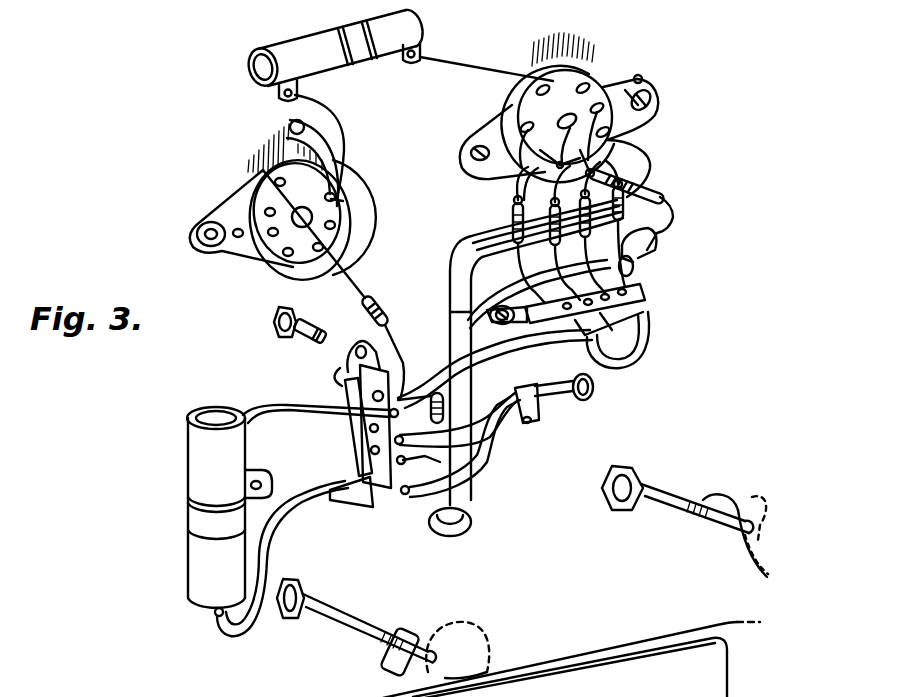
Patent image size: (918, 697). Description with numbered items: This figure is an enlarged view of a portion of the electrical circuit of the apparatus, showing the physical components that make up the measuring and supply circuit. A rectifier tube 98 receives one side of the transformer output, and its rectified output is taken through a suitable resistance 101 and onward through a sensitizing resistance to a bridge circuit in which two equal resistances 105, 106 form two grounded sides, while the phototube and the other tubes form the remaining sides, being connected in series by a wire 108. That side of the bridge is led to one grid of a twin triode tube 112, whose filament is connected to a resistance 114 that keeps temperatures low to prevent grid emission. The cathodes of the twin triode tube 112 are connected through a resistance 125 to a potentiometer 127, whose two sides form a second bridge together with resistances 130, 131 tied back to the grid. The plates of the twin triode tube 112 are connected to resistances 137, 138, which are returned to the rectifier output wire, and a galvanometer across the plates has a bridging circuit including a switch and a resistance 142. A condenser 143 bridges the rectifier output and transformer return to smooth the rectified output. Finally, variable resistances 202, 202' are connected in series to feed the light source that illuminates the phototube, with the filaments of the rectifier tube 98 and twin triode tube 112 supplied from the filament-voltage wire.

The rectifier tube 98 is at (263, 168).
The resistance 101 is at (383, 314).
The resistance 105 is at (343, 393).
The resistance 106 is at (358, 504).
The wire 108 is at (448, 407).
The twin triode tube 112 is at (590, 70).
The resistance 114 is at (422, 24).
The resistance 125 is at (514, 205).
The potentiometer 127 is at (679, 498).
The resistance 130 is at (657, 240).
The resistance 131 is at (657, 187).
The resistance 137 is at (497, 226).
The resistance 138 is at (672, 213).
The resistance 142 is at (548, 160).
The condenser 143 is at (193, 562).
The variable resistance 202 is at (285, 339).
The variable resistance 202' is at (383, 628).